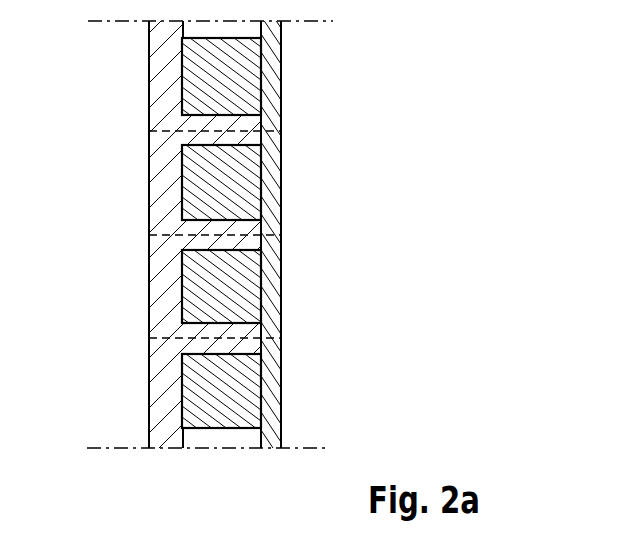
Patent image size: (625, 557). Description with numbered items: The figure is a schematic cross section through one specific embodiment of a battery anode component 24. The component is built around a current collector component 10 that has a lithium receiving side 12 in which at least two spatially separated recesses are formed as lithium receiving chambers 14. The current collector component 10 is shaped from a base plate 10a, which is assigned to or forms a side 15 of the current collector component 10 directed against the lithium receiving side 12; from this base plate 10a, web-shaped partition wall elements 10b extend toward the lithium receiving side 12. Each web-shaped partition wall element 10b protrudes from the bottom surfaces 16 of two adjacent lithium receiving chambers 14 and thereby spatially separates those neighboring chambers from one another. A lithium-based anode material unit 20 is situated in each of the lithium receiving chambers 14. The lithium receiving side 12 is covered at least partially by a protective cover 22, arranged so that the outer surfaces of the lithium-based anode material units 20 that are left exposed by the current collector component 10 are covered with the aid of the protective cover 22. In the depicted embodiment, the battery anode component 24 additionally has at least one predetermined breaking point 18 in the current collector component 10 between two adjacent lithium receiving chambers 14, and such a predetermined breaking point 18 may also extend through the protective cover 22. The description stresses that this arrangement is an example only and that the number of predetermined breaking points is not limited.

The current collector component 10 is at (127, 200).
The base plate 10a is at (162, 286).
The web-shaped partition wall element 10b is at (238, 348).
The lithium receiving side 12 is at (273, 85).
The lithium receiving chamber 14 is at (250, 272).
The side of current collector component 15 is at (136, 250).
The bottom surface 16 is at (195, 384).
The predetermined breaking point 18 is at (148, 142).
The lithium-based anode material unit 20 is at (248, 105).
The protective cover 22 is at (268, 212).
The battery anode component 24 is at (420, 203).